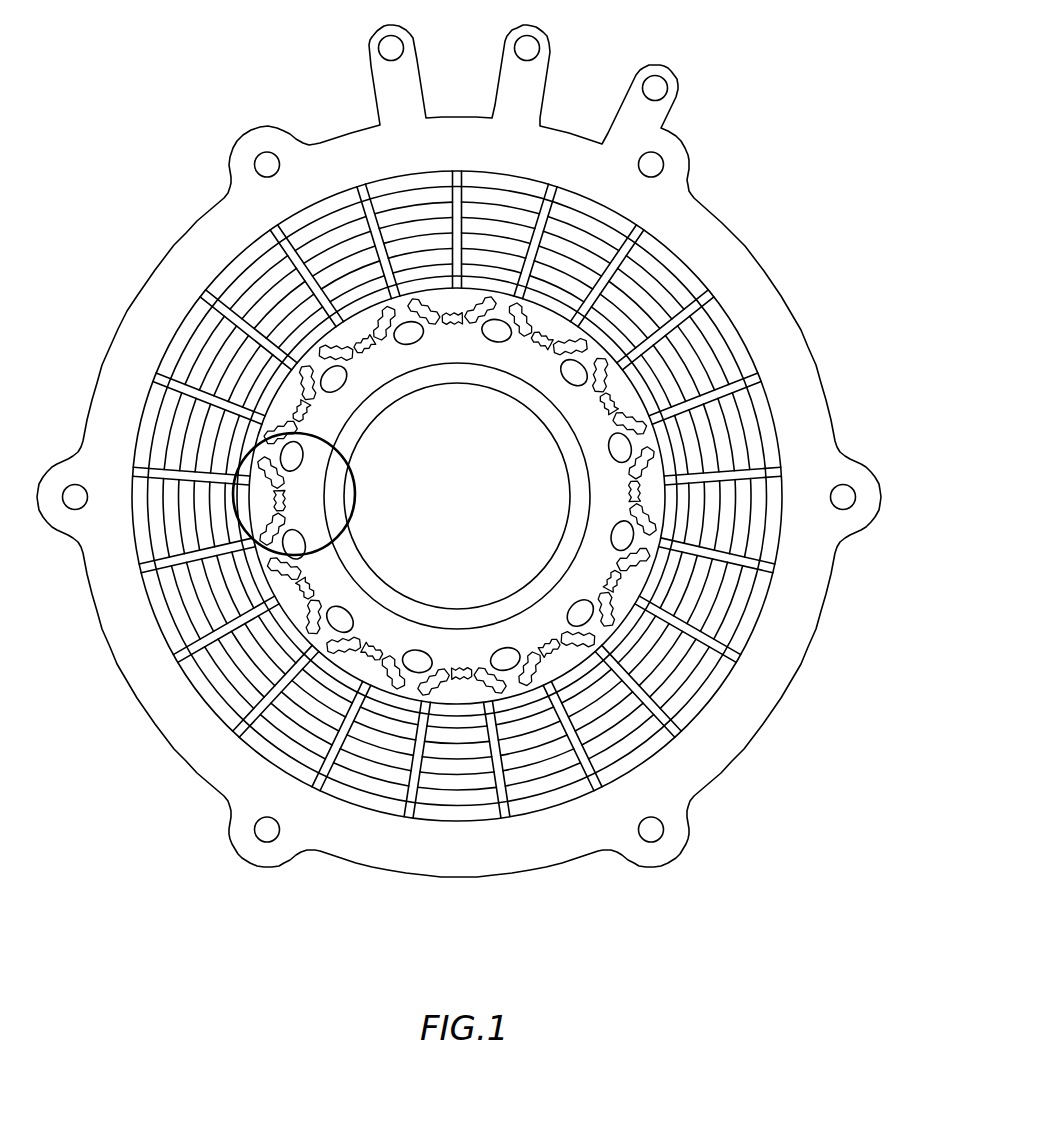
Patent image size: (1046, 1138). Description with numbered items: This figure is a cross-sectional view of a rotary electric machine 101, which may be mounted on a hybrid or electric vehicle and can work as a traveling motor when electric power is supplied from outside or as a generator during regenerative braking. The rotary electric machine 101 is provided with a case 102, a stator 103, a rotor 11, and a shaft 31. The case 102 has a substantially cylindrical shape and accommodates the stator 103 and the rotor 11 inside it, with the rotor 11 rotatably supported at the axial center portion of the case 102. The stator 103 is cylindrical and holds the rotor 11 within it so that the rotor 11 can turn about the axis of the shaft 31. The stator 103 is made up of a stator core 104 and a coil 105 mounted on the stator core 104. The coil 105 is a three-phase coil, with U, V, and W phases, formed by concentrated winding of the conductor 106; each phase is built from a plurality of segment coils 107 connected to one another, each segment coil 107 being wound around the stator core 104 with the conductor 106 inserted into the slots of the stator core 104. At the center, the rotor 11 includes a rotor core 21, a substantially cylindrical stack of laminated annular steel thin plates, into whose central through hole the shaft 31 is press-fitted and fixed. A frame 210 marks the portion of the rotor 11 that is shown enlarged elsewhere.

The rotary electric machine 101 is at (462, 474).
The case 102 is at (826, 78).
The rotor 11 is at (526, 507).
The stator 103 is at (526, 507).
The stator core 104 is at (767, 427).
The coil 105 is at (634, 755).
The conductor 106 is at (735, 605).
The segment coil 107 is at (703, 685).
The rotor core 21 is at (332, 496).
The frame 210 is at (232, 455).
The shaft 31 is at (455, 629).